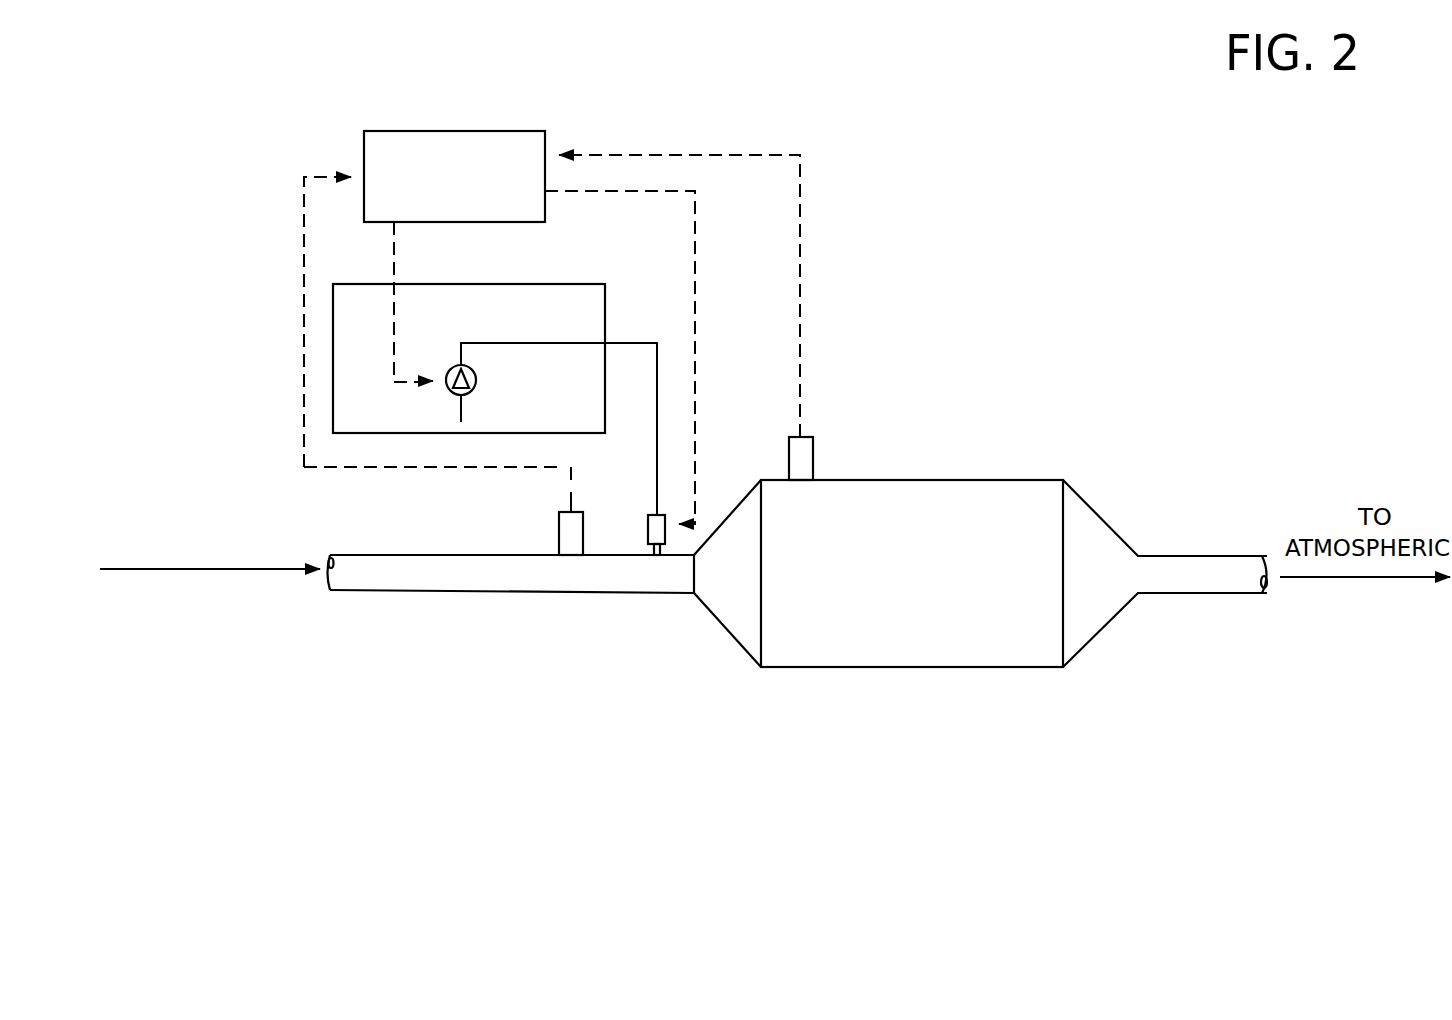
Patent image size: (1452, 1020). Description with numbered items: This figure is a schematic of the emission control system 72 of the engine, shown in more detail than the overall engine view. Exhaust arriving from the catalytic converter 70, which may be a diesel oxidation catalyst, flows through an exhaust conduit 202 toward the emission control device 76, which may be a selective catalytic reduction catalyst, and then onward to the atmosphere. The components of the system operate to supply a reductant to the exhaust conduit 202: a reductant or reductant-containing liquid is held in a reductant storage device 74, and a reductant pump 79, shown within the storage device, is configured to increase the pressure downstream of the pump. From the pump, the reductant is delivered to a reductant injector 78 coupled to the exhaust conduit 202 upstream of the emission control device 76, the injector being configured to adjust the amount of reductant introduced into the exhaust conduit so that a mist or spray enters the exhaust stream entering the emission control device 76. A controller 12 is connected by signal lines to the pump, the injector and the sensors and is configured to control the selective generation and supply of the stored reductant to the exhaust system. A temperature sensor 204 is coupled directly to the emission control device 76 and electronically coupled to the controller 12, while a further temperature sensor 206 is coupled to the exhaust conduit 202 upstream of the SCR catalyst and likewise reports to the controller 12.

The controller 12 is at (455, 131).
The reductant storage device 74 is at (580, 284).
The reductant pump 79 is at (476, 379).
The emission control system 72 is at (1000, 343).
The exhaust conduit 202 is at (405, 555).
The temperature sensor 206 is at (579, 510).
The reductant injector 78 is at (648, 531).
The emission control device 76 is at (910, 667).
The temperature sensor 204 is at (802, 437).
The catalytic converter 70 is at (210, 524).